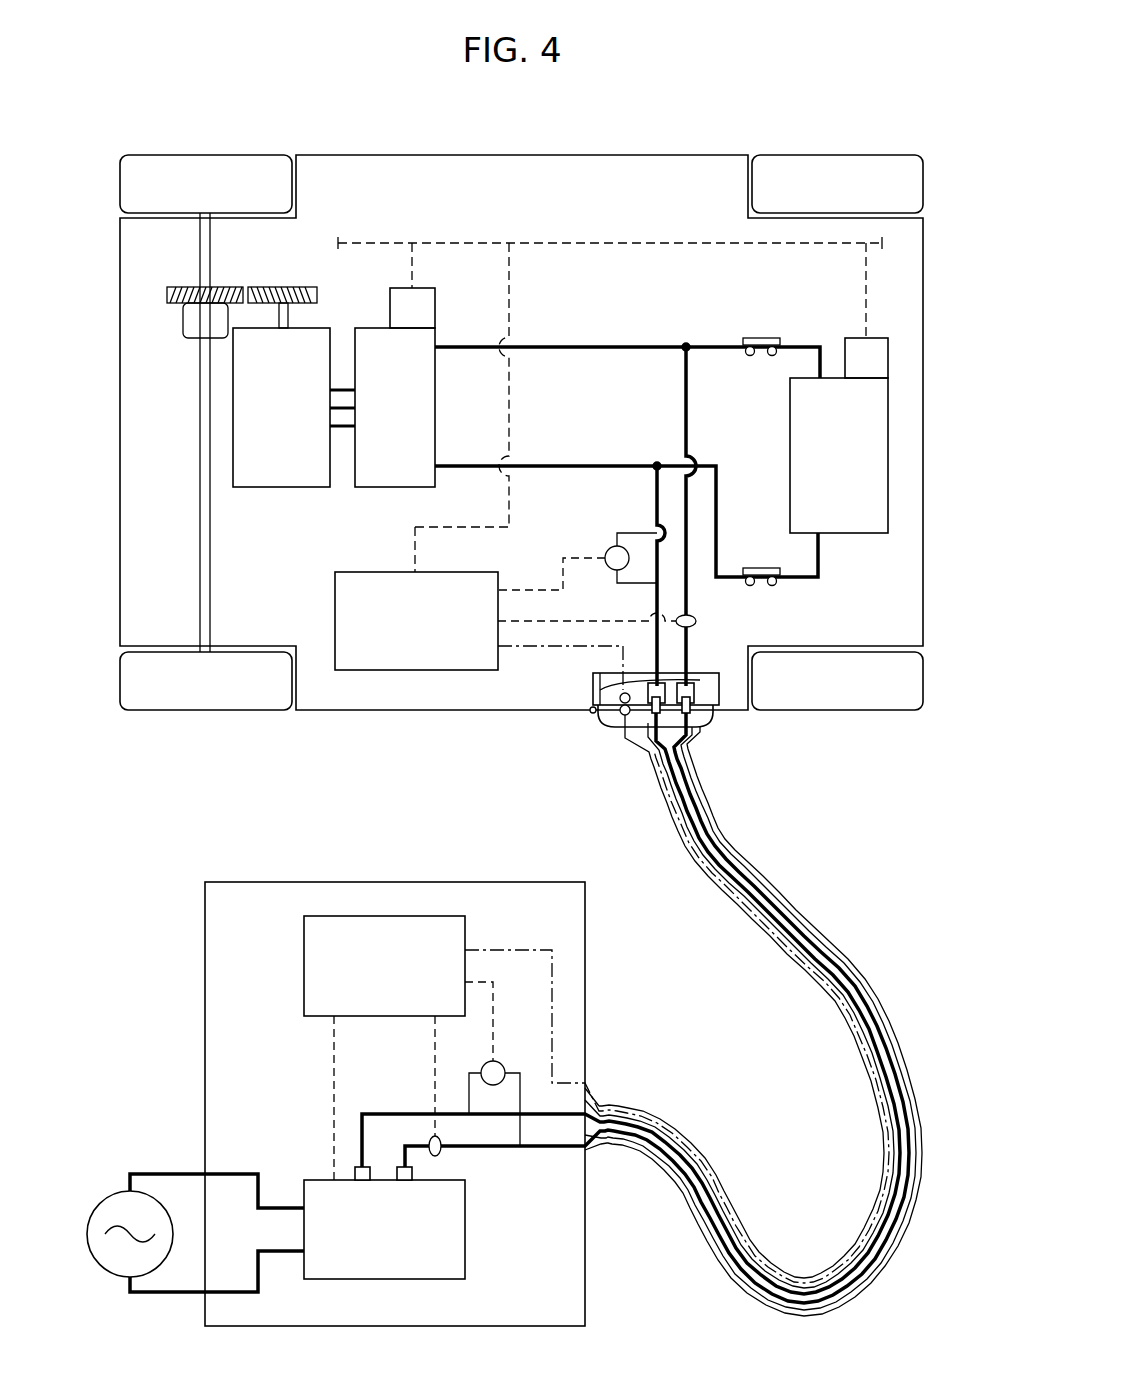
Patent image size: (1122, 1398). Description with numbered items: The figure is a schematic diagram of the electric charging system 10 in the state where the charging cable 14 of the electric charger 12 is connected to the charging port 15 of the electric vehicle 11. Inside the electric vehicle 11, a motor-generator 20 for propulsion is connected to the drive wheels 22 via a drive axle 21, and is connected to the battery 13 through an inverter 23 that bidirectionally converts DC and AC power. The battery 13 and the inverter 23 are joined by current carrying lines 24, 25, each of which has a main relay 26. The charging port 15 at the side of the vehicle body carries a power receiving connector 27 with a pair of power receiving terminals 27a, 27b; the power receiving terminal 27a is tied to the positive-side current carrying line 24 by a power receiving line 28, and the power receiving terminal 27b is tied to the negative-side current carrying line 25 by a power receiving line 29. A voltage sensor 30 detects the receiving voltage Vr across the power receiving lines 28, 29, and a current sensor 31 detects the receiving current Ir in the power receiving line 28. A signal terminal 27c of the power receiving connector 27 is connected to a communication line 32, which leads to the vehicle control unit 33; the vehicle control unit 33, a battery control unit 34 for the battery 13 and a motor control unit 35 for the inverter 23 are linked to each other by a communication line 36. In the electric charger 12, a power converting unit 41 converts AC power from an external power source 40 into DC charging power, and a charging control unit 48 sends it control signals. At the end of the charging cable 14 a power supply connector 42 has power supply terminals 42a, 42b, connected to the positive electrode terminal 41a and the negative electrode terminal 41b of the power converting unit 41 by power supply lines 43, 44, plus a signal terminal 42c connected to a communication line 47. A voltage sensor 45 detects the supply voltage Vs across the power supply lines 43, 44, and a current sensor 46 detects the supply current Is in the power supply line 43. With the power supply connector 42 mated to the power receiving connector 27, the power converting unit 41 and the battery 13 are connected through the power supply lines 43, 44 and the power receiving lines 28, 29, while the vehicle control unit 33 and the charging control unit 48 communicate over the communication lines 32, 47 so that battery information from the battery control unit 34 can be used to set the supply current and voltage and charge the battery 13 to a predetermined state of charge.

The electric charging system 10 is at (818, 112).
The electric vehicle 11 is at (692, 150).
The electric charger 12 is at (200, 878).
The battery 13 is at (862, 534).
The charging cable 14 is at (780, 892).
The charging port 15 is at (594, 728).
The motor-generator 20 is at (265, 488).
The drive axle 21 is at (200, 396).
The drive wheels 22 is at (200, 154).
The inverter 23 is at (375, 488).
The current carrying line 24 is at (632, 346).
The current carrying line 25 is at (607, 465).
The main relay 26 is at (762, 337).
The power receiving connector 27 is at (725, 689).
The power receiving terminal 27a is at (700, 680).
The power receiving terminal 27b is at (619, 696).
The signal terminal 27c is at (591, 713).
The power receiving line 28 is at (690, 400).
The power receiving line 29 is at (655, 497).
The voltage sensor 30 is at (606, 552).
The current sensor 31 is at (698, 621).
The communication line 32 is at (517, 648).
The vehicle control unit 33 is at (334, 611).
The battery control unit 34 is at (856, 337).
The motor control unit 35 is at (437, 304).
The communication line 36 is at (678, 243).
The external power source 40 is at (112, 1196).
The power converting unit 41 is at (466, 1253).
The positive electrode terminal 41a is at (402, 1166).
The negative electrode terminal 41b is at (358, 1166).
The power supply connector 42 is at (722, 720).
The power supply terminal 42a is at (690, 716).
The power supply terminal 42b is at (650, 718).
The signal terminal 42c is at (622, 716).
The power supply line 43 is at (808, 930).
The power supply line 44 is at (822, 975).
The voltage sensor 45 is at (500, 1062).
The current sensor 46 is at (442, 1153).
The communication line 47 is at (575, 980).
The charging control unit 48 is at (420, 915).